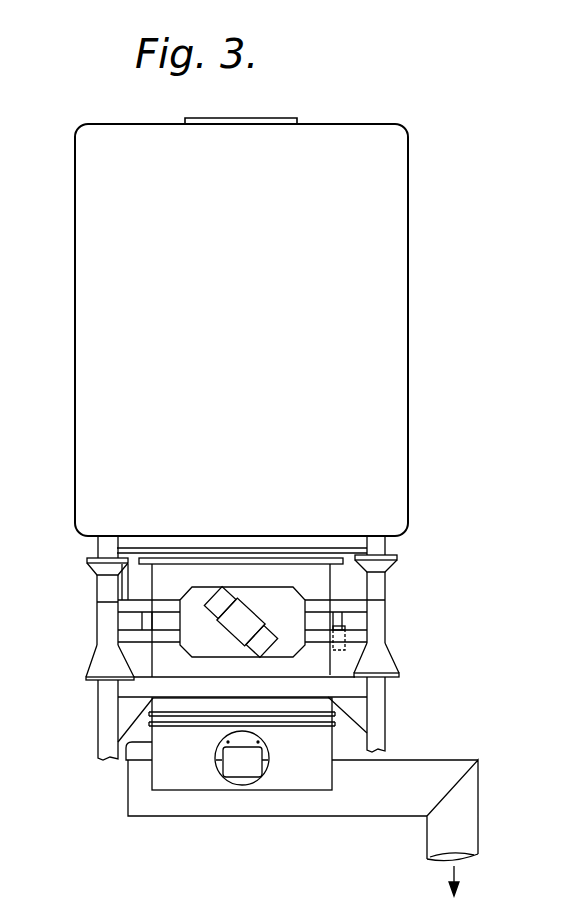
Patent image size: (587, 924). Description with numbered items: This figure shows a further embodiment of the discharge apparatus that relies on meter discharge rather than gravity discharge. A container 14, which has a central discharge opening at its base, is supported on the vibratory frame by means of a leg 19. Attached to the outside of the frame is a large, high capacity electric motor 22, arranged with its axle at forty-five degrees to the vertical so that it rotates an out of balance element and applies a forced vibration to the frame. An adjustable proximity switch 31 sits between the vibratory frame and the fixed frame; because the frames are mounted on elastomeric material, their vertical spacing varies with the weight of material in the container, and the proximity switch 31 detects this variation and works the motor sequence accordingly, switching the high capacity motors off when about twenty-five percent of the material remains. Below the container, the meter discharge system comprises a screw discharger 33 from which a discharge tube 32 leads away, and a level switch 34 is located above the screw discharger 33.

The container 14 is at (397, 307).
The leg 19 is at (97, 546).
The large electric motor 22 is at (227, 594).
The adjustable proximity switch 31 is at (345, 650).
The discharge tube 32 is at (453, 802).
The screw discharger 33 is at (274, 806).
The level switch 34 is at (237, 770).